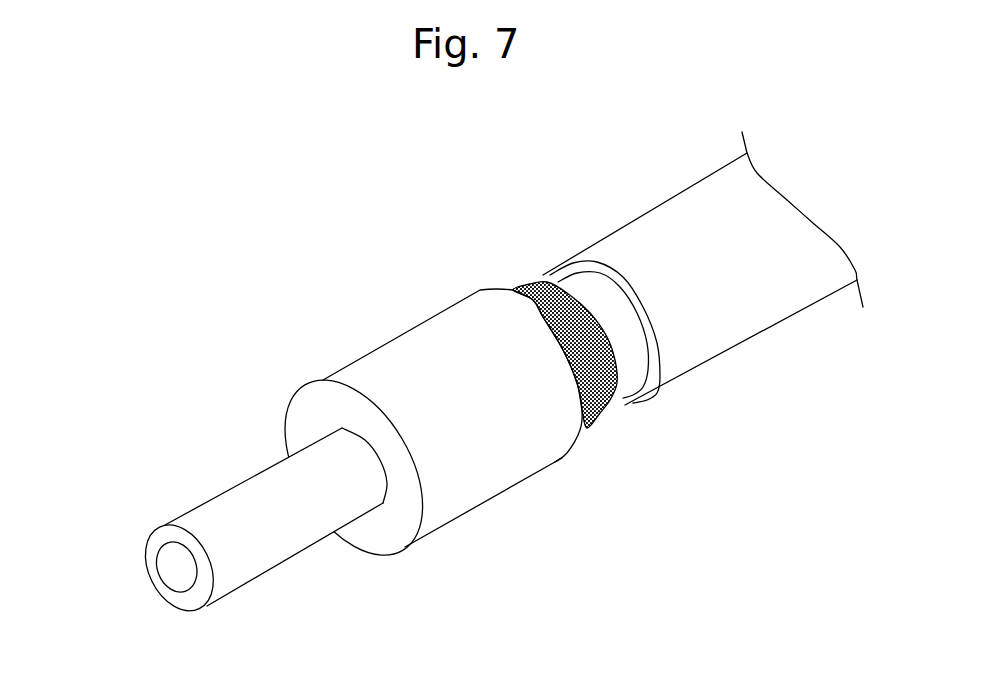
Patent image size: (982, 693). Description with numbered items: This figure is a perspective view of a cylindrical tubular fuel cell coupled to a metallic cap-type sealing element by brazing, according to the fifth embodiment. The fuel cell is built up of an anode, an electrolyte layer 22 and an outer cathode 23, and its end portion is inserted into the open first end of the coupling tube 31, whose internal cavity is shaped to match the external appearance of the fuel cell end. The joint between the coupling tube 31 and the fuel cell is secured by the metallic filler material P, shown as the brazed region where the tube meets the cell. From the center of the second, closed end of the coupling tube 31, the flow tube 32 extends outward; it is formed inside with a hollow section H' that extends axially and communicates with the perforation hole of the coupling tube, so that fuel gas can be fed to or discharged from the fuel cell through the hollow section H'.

The cathode 23 is at (712, 340).
The electrolyte layer 22 is at (630, 368).
The coupling tube 31 is at (517, 452).
The flow tube 32 is at (280, 543).
The metallic filler material P is at (545, 293).
The hollow section H' is at (133, 593).